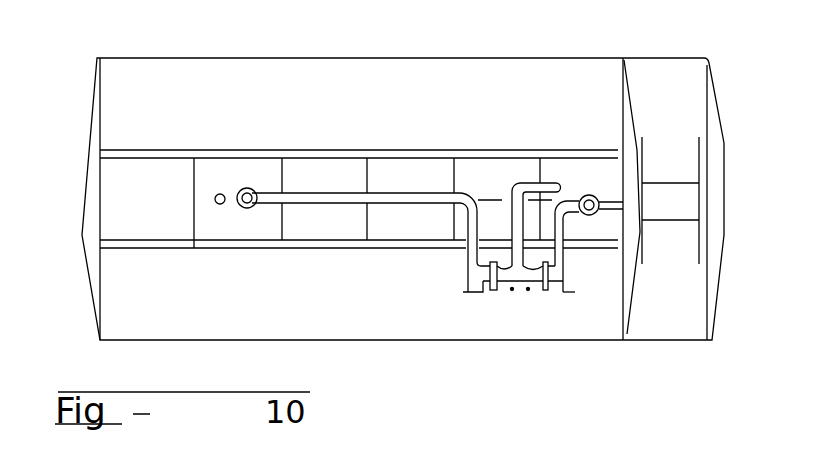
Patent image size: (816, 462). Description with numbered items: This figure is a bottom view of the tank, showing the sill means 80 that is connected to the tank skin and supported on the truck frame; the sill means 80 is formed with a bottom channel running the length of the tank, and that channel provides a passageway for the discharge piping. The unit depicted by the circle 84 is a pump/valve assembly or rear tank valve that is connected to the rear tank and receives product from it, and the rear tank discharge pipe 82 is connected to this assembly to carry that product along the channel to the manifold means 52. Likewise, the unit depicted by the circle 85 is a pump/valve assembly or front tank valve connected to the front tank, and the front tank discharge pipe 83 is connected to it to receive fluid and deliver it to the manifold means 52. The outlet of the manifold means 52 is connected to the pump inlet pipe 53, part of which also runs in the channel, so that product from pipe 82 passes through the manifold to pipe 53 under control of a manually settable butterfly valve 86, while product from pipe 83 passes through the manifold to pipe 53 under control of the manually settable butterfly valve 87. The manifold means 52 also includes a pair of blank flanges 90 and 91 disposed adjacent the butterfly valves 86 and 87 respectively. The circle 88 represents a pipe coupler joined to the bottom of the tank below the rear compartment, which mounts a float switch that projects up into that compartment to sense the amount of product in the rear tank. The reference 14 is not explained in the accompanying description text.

The housing 14 is at (671, 183).
The sill means 80 is at (133, 157).
The pipe coupler 88 is at (219, 194).
The rear tank valve 84 is at (252, 188).
The rear tank discharge pipe 82 is at (325, 190).
The pump inlet pipe 53 is at (512, 184).
The front tank valve 85 is at (598, 210).
The front tank discharge pipe 83 is at (562, 235).
The manifold means 52 is at (492, 255).
The blank flange 90 is at (470, 293).
The blank flange 91 is at (571, 293).
The butterfly valve 86 is at (512, 290).
The butterfly valve 87 is at (528, 290).